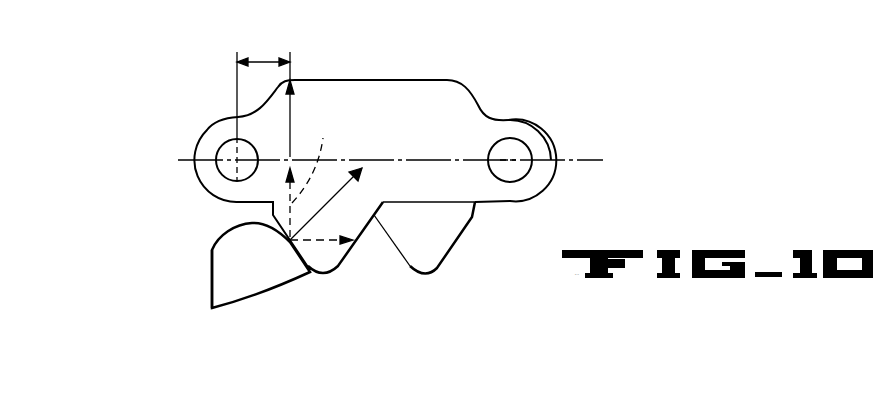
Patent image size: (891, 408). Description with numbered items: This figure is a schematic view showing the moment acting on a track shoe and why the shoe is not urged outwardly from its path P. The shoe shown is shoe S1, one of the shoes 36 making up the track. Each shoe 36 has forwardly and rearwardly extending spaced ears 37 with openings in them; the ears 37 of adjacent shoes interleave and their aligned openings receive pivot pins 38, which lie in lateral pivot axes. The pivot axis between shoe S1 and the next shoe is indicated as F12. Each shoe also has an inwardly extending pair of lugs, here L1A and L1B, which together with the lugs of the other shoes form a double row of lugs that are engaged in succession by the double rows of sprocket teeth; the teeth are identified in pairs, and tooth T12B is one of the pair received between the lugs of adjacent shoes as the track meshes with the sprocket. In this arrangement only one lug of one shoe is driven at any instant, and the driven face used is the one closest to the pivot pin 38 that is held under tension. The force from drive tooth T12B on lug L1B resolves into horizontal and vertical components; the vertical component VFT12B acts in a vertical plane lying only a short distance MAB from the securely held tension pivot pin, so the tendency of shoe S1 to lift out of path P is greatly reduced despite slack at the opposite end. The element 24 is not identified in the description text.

The shoe S1 is at (407, 78).
The shoe 36 is at (472, 98).
The ear 37 is at (503, 122).
The pivot pin 38 is at (222, 175).
The pivot axis F12 is at (237, 160).
The path P is at (567, 162).
The distance MAB is at (258, 58).
The vertical force component VFT12B is at (308, 133).
The lug L1B is at (323, 268).
The lug L1A is at (427, 268).
The sprocket tooth T12B is at (217, 250).
The tooth body 24 is at (212, 277).